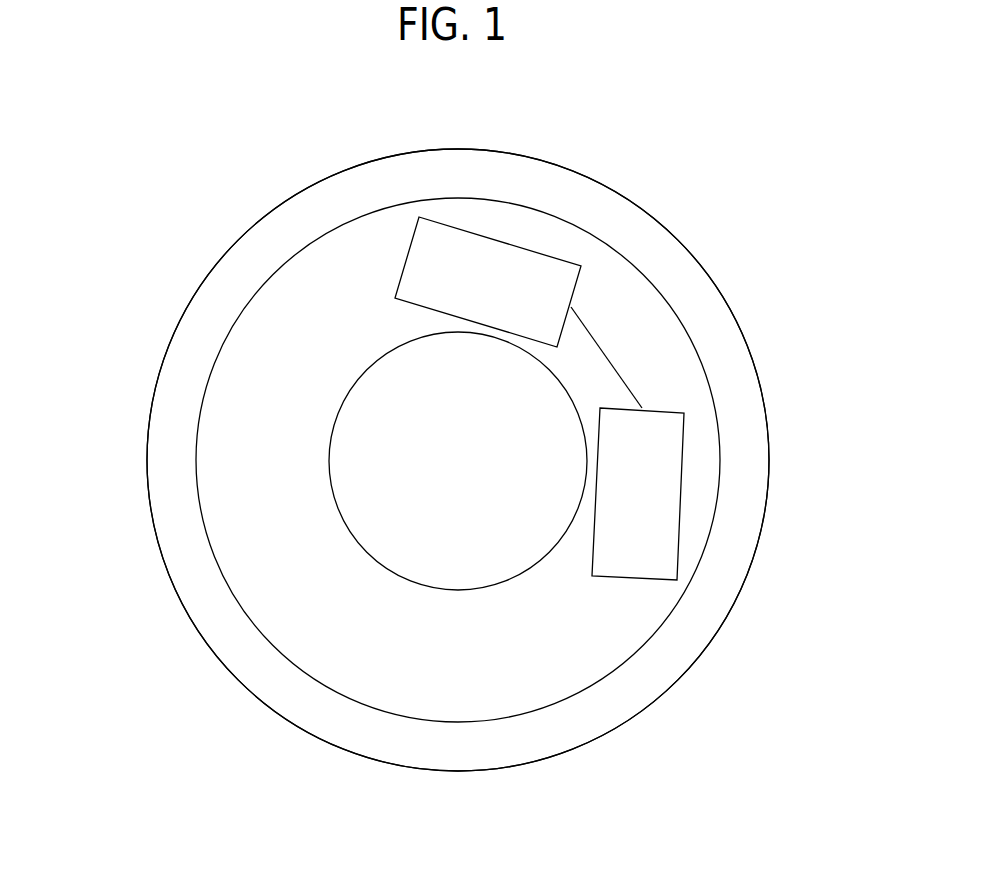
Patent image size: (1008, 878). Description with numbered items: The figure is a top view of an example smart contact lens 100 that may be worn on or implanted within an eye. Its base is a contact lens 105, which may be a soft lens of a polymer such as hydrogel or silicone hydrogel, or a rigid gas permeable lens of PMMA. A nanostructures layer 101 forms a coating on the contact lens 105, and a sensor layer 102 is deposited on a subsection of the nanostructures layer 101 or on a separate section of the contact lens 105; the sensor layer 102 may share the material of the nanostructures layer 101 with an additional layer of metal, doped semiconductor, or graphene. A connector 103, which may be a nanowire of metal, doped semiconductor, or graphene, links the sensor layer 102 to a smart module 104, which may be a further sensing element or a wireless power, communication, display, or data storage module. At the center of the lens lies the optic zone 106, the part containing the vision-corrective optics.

The smart contact lens 100 is at (762, 102).
The nanostructures layer 101 is at (313, 245).
The sensor layer 102 is at (508, 257).
The connector 103 is at (607, 360).
The smart module 104 is at (653, 542).
The contact lens 105 is at (203, 283).
The optic zone 106 is at (488, 530).